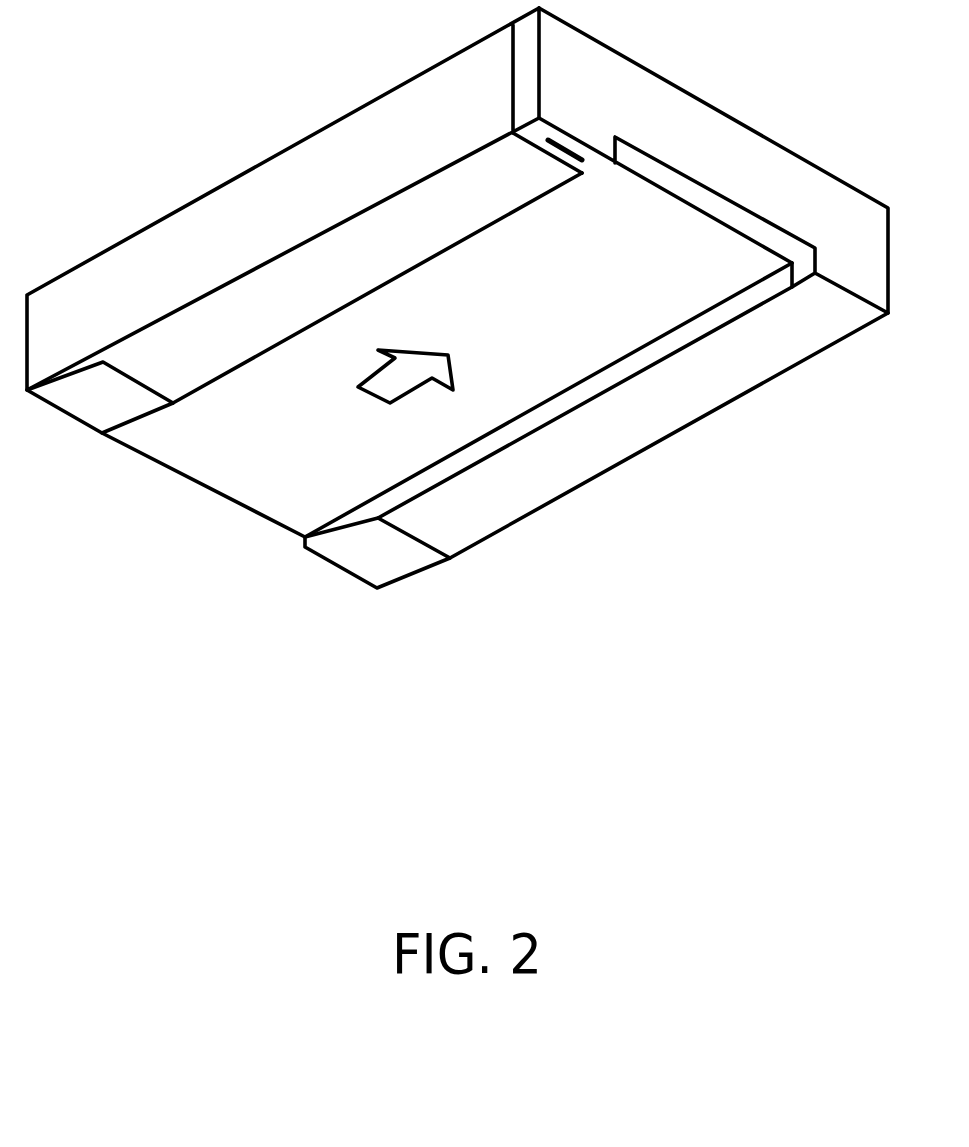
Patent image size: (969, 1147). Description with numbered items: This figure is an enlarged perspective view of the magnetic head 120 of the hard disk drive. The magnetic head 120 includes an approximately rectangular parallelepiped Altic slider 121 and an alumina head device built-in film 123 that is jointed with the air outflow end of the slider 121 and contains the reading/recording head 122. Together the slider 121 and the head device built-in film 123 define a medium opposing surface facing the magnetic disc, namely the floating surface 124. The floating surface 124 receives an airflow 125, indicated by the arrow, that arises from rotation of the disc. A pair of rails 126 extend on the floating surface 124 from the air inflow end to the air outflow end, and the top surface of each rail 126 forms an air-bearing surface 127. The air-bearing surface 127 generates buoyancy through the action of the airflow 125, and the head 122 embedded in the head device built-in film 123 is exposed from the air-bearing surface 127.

The magnetic head 120 is at (283, 145).
The slider 121 is at (852, 322).
The reading/recording head 122 is at (558, 145).
The head device built-in film 123 is at (890, 228).
The floating surface 124 is at (489, 311).
The airflow 125 is at (373, 393).
The rail 126 is at (251, 373).
The air-bearing surface 127 is at (518, 200).